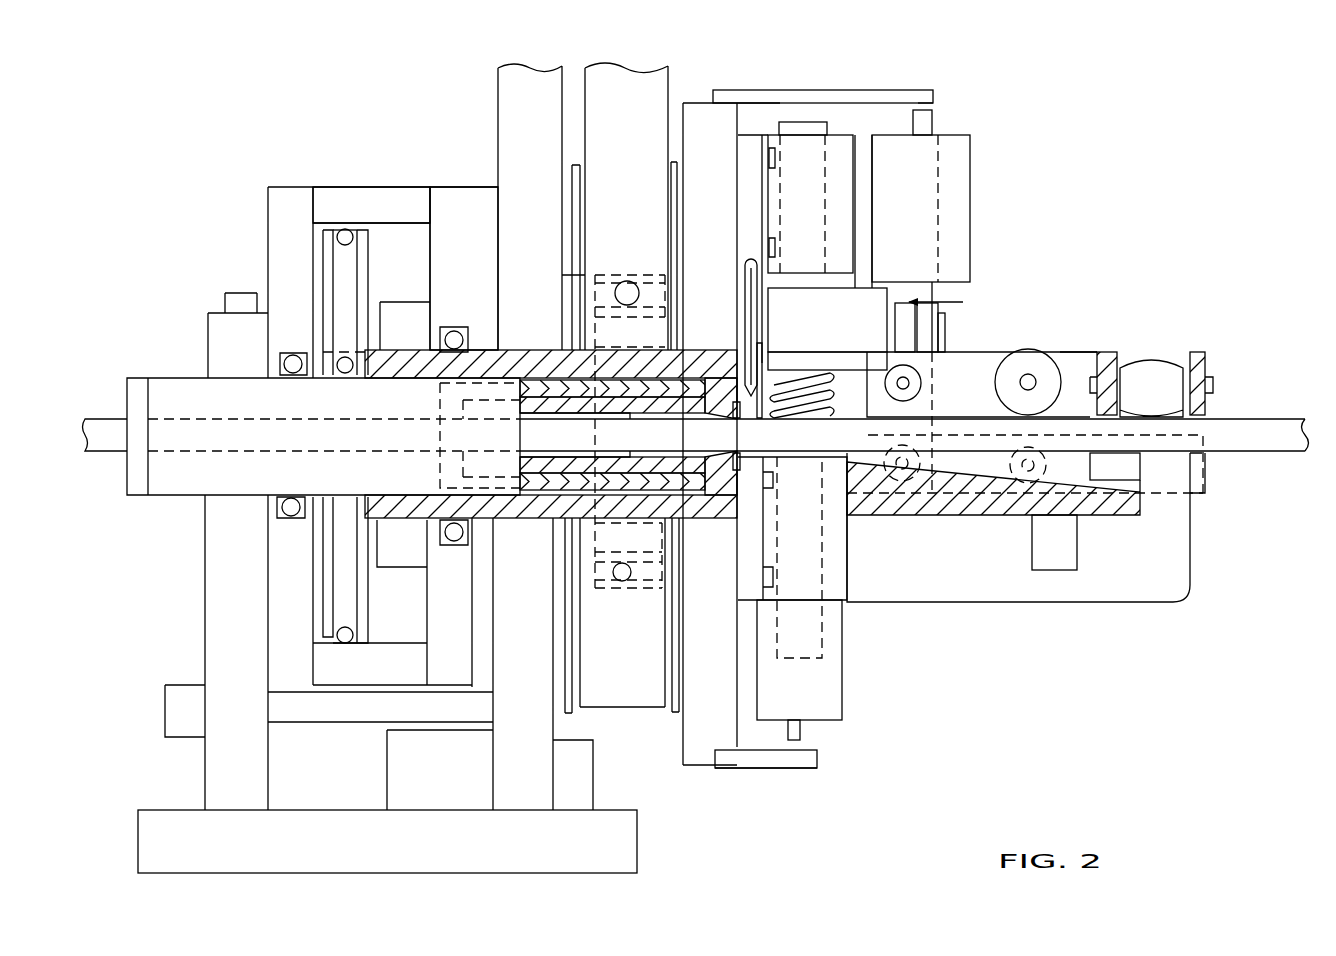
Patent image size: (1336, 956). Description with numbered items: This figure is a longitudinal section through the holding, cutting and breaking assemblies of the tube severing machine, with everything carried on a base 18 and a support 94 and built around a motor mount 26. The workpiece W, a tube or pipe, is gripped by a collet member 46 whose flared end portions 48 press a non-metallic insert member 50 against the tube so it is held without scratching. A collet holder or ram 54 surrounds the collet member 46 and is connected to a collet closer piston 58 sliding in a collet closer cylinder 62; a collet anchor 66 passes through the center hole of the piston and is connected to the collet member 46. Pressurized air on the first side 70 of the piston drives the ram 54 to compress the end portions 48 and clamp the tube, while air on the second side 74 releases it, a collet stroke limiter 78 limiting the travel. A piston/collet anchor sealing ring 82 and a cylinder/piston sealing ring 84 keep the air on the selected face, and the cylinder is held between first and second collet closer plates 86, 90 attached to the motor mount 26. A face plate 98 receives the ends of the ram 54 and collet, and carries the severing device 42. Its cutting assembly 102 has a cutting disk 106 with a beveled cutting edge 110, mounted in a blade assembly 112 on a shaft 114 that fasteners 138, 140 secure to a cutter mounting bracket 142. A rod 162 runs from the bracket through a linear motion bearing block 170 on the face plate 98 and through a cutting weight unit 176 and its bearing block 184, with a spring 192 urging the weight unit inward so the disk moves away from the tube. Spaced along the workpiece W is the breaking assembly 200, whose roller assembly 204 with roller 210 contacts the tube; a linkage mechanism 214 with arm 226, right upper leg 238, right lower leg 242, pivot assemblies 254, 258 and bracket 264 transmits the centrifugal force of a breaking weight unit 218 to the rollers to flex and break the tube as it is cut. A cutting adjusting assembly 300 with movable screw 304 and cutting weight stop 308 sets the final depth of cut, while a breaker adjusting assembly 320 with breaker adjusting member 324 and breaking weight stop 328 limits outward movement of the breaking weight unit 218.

The base 18 is at (535, 852).
The motor mount 26 is at (517, 95).
The severing device 42 is at (1062, 175).
The collet member 46 is at (708, 395).
The flared end portions 48 is at (720, 350).
The insert member 50 is at (663, 413).
The collet holder or ram 54 is at (517, 350).
The collet closer piston 58 is at (356, 240).
The collet closer cylinder 62 is at (370, 190).
The collet anchor 66 is at (190, 496).
The first side 70 is at (322, 276).
The second side 74 is at (368, 287).
The collet stroke limiter 78 is at (417, 570).
The piston/collet anchor sealing ring 82 is at (345, 356).
The cylinder/piston sealing ring 84 is at (352, 228).
The first collet closer plate 86 is at (268, 226).
The second collet closer plate 90 is at (462, 193).
The support leg 94 is at (205, 628).
The face plate 98 is at (697, 110).
The cutting assembly 102 is at (970, 291).
The cutting disk or blade 106 is at (757, 262).
The cutting edge 110 is at (751, 418).
The blade assembly 112 is at (950, 338).
The shaft 114 is at (943, 355).
The fastener 138 is at (930, 315).
The fastener 140 is at (927, 323).
The cutter mounting bracket 142 is at (795, 325).
The second rod 162 is at (790, 122).
The linear motion bearing block 170 is at (842, 148).
The cutting weight unit 176 is at (820, 678).
The linear motion bearing block 184 is at (833, 586).
The spring 192 is at (827, 370).
The breaking assembly 200 is at (1050, 380).
The roller assembly 204 is at (1200, 346).
The roller 210 is at (1132, 400).
The linkage mechanism 214 is at (915, 504).
The breaking weight unit 218 is at (960, 223).
The arm 226 is at (930, 273).
The right upper leg 238 is at (951, 409).
The right lower leg 242 is at (1165, 480).
The pivot assembly 254 is at (1082, 341).
The pivot assembly 258 is at (1025, 487).
The bracket 264 is at (1133, 594).
The cutting adjusting assembly 300 is at (806, 775).
The cutter adjusting member or movable screw 304 is at (802, 727).
The cutting weight stop 308 is at (820, 760).
The breaker adjusting assembly 320 is at (946, 91).
The breaker adjusting member 324 is at (932, 123).
The breaking weight stop 328 is at (923, 100).
The workpiece W is at (1248, 432).